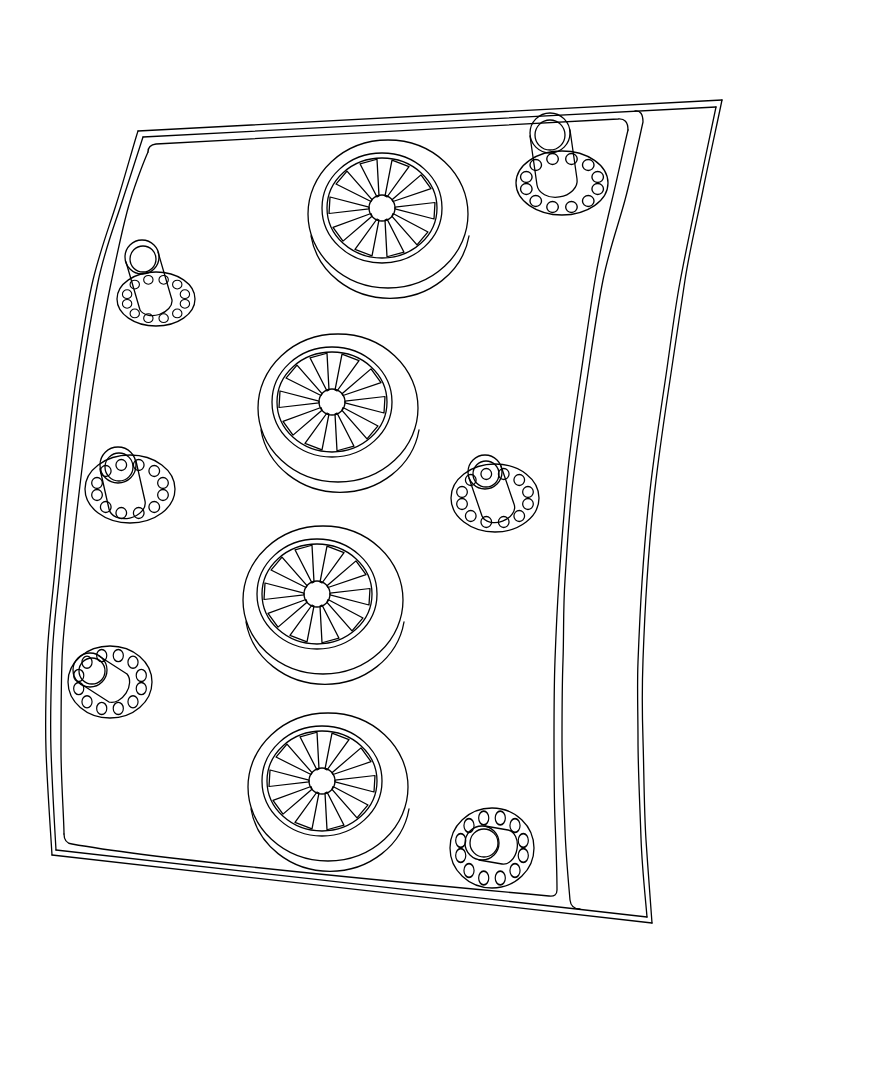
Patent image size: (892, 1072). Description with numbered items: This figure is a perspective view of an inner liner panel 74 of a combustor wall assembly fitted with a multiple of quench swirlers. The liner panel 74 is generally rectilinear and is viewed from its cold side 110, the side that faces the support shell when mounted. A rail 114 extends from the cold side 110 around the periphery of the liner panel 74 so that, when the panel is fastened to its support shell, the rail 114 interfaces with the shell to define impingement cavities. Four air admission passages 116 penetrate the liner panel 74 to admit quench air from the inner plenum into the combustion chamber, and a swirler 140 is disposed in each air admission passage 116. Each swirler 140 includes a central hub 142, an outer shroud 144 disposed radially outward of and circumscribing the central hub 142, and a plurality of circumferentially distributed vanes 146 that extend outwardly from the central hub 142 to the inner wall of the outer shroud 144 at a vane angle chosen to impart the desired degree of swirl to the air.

The liner panel 74 is at (514, 62).
The cold side 110 is at (110, 803).
The rail 114 is at (298, 128).
The air admission passage 116 is at (412, 752).
The swirler 140 is at (372, 745).
The central hub 142 is at (377, 817).
The outer shroud 144 is at (325, 820).
The vane 146 is at (322, 829).